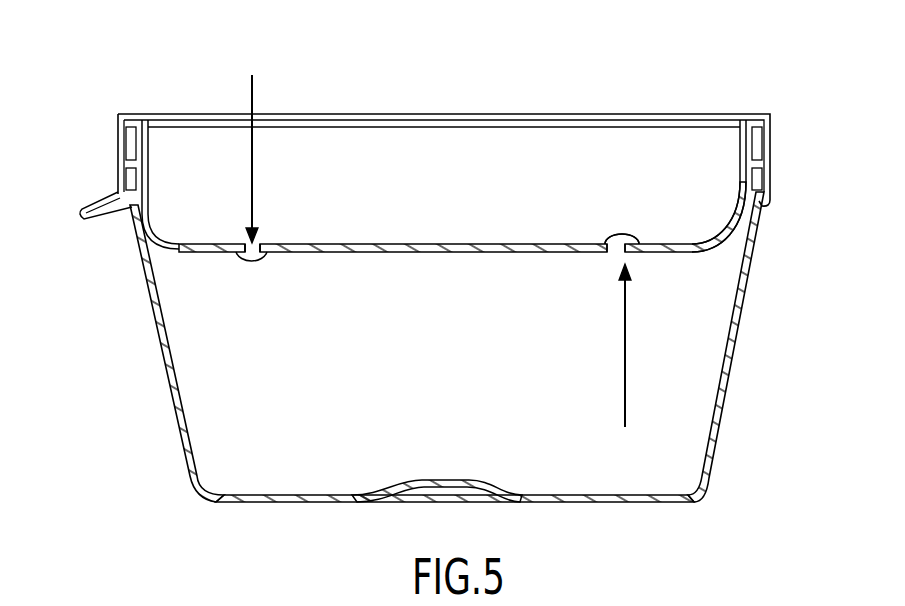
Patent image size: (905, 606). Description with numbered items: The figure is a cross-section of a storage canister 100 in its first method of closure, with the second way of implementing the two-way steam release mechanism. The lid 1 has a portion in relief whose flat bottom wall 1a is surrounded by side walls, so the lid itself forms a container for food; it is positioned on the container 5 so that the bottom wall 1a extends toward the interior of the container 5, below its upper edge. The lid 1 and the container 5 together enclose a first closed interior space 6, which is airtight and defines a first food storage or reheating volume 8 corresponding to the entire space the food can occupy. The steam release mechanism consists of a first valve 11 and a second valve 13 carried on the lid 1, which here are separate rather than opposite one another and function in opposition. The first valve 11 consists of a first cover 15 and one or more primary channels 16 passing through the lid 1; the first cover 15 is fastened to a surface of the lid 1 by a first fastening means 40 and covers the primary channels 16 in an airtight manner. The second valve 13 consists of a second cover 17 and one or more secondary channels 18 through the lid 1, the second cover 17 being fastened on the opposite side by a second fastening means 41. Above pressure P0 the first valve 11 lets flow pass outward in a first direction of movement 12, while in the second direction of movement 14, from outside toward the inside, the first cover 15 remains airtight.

The lid 1 is at (717, 132).
The bottom wall 1a is at (687, 247).
The container 5 is at (191, 480).
The first closed interior space 6 is at (213, 391).
The first food storage or reheating volume 8 is at (164, 353).
The first valve 11 is at (624, 152).
The first direction of movement 12 is at (623, 382).
The second valve 13 is at (217, 304).
The second direction of movement 14 is at (258, 138).
The first cover 15 is at (637, 242).
The primary channels 16 is at (626, 253).
The second cover 17 is at (246, 251).
The secondary channels 18 is at (236, 250).
The first fastening means 40 is at (608, 240).
The second fastening means 41 is at (262, 243).
The storage canister 100 is at (449, 305).